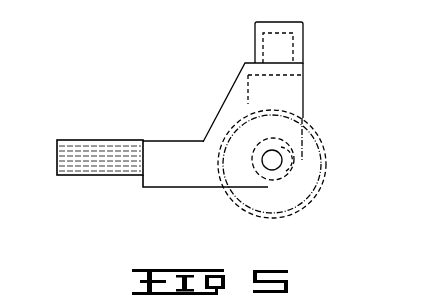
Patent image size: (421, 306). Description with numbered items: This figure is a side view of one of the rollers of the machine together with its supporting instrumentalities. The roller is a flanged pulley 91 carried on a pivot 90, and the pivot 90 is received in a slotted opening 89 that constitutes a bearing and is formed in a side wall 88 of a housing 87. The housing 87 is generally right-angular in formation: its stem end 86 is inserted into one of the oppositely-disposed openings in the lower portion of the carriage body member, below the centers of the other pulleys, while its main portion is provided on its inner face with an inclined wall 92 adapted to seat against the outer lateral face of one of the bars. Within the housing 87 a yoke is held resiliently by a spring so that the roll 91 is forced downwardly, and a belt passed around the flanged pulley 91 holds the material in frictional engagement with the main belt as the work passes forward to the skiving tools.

The stem end 86 is at (117, 137).
The housing 87 is at (176, 146).
The side wall 88 is at (306, 126).
The slotted opening 89 is at (262, 153).
The pivot 90 is at (285, 172).
The flanged pulley 91 is at (298, 211).
The inclined wall 92 is at (232, 87).